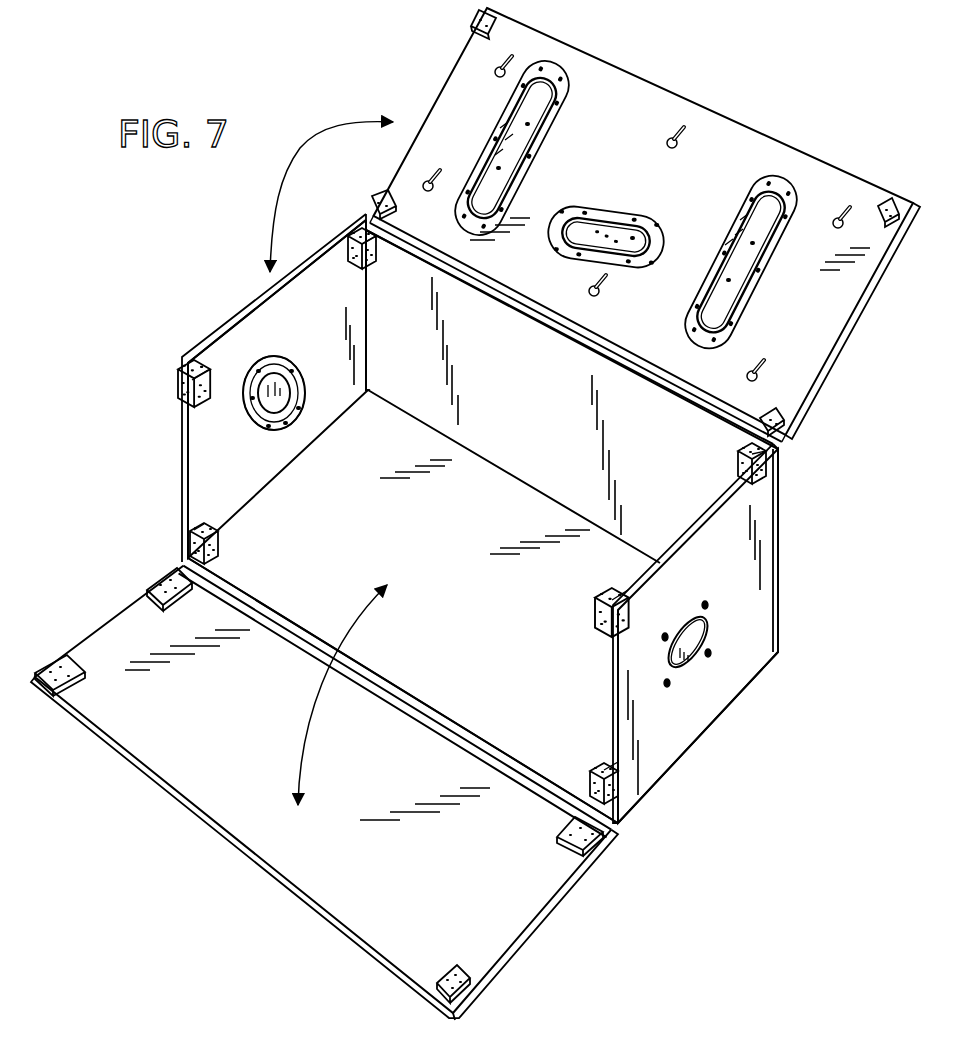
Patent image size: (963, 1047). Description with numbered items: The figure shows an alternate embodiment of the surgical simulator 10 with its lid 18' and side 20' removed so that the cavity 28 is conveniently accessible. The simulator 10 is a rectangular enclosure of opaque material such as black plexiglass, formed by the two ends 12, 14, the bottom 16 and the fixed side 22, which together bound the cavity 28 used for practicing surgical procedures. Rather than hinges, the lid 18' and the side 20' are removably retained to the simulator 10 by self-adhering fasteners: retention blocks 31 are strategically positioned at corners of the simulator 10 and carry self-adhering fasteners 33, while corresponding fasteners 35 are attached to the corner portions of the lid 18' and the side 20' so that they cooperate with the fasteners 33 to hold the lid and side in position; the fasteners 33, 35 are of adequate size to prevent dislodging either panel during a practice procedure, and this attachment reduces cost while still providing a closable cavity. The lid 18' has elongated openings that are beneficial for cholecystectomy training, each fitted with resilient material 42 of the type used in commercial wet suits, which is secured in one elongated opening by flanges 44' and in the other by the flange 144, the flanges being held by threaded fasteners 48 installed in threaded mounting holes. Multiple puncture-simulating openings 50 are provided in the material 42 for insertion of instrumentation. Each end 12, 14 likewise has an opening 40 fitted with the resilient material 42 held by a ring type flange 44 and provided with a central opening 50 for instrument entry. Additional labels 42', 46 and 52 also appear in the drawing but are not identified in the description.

The simulator 10 is at (217, 247).
The end 12 is at (744, 553).
The end 14 is at (316, 322).
The bottom 16 is at (461, 583).
The lid 18' is at (595, 223).
The side 20' is at (324, 793).
The side 22 is at (567, 430).
The cavity 28 is at (331, 282).
The retention blocks 31 is at (378, 258).
The self-adhering fasteners 33 is at (355, 229).
The fasteners 35 is at (478, 16).
The opening 40 is at (688, 668).
The resilient material 42 is at (513, 378).
The elongated opening 42' is at (576, 246).
The ring type flanges 44 is at (266, 381).
The flanges 44' is at (607, 205).
The flange outer rim 46 is at (497, 135).
The threaded fasteners 48 is at (478, 139).
The puncture-simulating opening 50 is at (498, 168).
The screw fastener 52 is at (497, 62).
The flange 144 is at (650, 214).